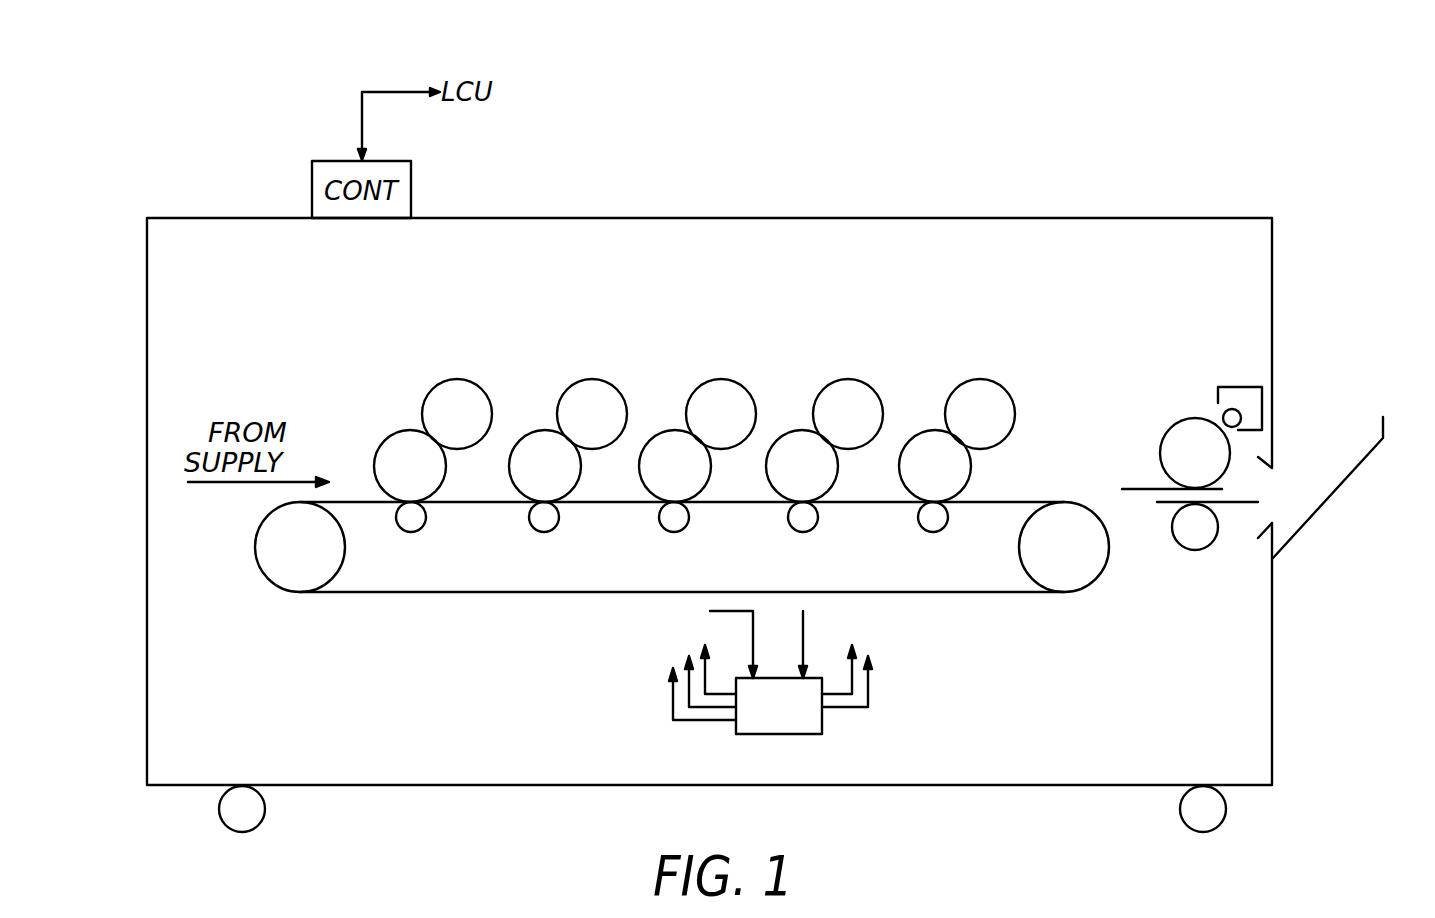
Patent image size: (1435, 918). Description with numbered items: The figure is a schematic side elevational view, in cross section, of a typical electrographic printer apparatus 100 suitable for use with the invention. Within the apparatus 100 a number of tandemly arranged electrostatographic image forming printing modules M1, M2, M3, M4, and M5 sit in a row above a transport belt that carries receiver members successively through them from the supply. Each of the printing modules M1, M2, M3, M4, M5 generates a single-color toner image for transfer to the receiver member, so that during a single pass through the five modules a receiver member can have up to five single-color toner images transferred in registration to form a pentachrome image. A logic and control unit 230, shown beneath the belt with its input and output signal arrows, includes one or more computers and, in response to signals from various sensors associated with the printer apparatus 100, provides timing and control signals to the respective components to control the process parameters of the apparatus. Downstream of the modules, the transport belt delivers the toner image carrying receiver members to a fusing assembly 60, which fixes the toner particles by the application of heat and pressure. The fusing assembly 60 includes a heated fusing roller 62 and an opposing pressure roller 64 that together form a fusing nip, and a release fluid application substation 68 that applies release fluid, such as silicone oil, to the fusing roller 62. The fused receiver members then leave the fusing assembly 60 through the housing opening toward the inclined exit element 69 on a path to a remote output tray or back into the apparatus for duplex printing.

The electrographic printer apparatus 100 is at (960, 147).
The fusing assembly 60 is at (1208, 457).
The heated fusing roller 62 is at (1160, 447).
The pressure roller 64 is at (1193, 550).
The release fluid application substation 68 is at (1243, 387).
The output tray 69 is at (1343, 483).
The logic and control unit 230 is at (792, 734).
The printing module M1 is at (458, 368).
The printing module M2 is at (593, 368).
The printing module M3 is at (722, 368).
The printing module M4 is at (848, 368).
The printing module M5 is at (980, 368).